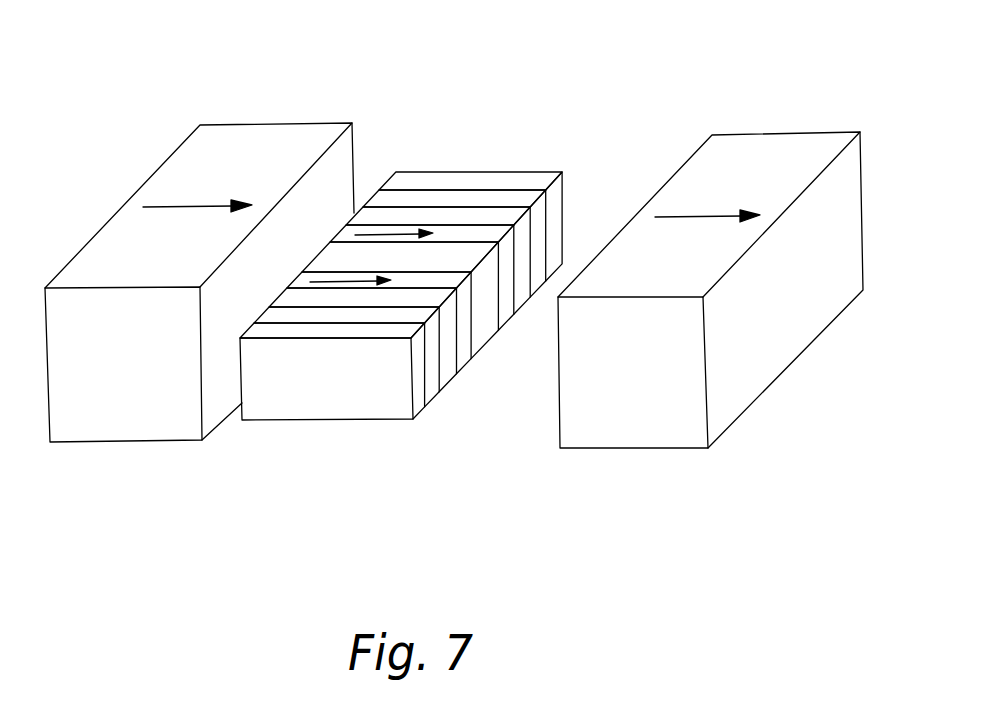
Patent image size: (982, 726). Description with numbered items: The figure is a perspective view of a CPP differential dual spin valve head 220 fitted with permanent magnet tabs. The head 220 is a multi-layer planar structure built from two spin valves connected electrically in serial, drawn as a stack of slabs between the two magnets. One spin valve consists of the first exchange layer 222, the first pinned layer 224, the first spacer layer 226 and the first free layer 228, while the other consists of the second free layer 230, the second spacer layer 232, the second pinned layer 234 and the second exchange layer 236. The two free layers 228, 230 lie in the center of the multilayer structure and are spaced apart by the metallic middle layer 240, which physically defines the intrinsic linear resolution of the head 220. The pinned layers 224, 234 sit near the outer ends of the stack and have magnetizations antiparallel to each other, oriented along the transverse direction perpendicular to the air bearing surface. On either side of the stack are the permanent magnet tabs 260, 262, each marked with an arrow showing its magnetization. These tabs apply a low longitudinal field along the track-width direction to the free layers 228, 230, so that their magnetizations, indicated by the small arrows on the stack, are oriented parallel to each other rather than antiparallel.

The CPP differential dual spin valve head 220 is at (352, 62).
The first exchange layer 222 is at (440, 183).
The first pinned layer 224 is at (507, 200).
The first spacer layer 226 is at (525, 287).
The first free layer 228 is at (507, 303).
The second free layer 230 is at (467, 348).
The second spacer layer 232 is at (452, 400).
The second pinned layer 234 is at (437, 395).
The second exchange layer 236 is at (417, 393).
The metallic middle layer 240 is at (485, 322).
The permanent magnet tab 260 is at (177, 167).
The permanent magnet tab 262 is at (750, 152).